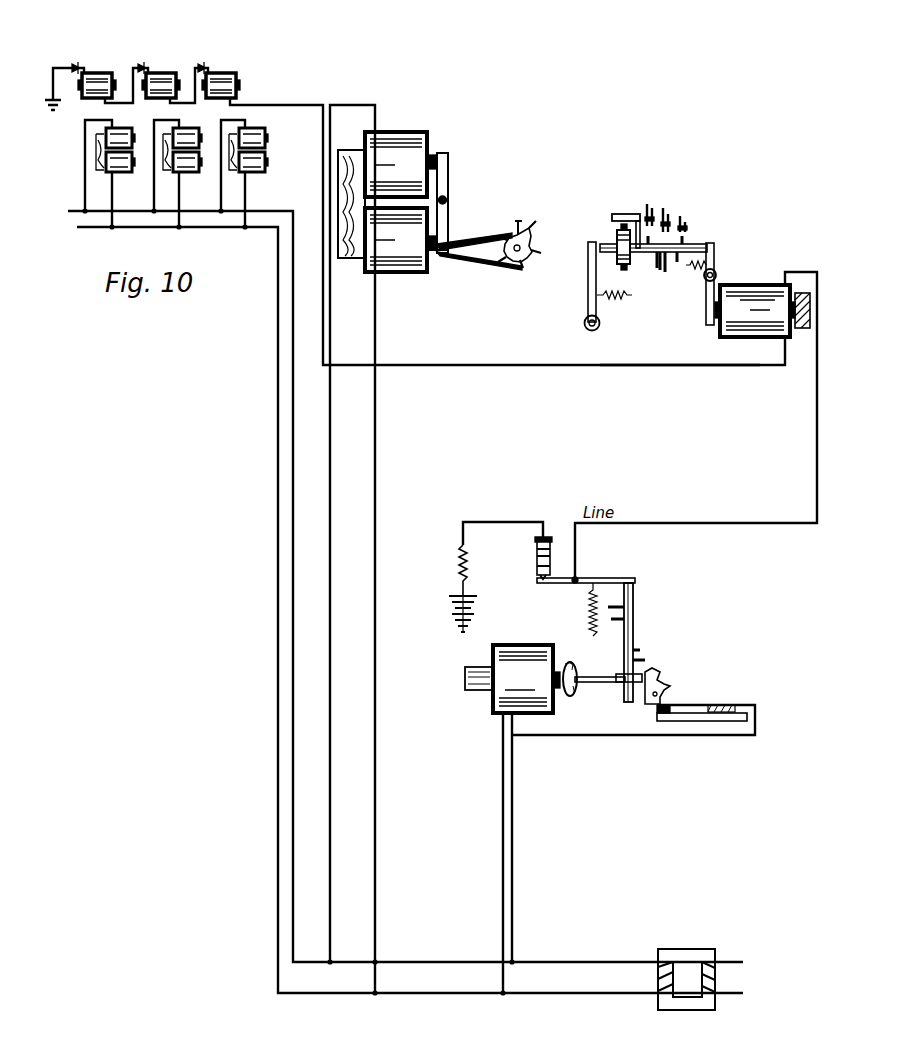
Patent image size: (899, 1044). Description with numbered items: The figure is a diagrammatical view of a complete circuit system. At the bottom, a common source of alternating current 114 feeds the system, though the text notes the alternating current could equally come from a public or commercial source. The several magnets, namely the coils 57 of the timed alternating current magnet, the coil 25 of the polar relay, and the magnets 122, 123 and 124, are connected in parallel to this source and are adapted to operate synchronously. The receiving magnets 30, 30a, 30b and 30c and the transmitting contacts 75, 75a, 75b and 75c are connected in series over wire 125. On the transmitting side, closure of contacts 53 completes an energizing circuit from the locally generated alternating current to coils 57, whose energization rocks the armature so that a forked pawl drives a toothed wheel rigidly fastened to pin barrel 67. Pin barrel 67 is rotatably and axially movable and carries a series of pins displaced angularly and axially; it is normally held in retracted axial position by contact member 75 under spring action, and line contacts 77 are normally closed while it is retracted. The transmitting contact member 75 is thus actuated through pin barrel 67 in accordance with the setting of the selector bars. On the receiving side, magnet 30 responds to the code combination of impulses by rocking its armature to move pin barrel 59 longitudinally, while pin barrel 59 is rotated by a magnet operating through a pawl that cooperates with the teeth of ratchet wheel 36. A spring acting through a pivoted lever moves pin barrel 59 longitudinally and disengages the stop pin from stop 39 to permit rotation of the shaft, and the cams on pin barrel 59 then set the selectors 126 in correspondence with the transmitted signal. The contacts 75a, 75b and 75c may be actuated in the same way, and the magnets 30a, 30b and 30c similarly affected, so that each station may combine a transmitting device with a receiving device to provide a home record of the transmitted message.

The transmitting contact 75c is at (74, 62).
The receiving magnet 30c is at (100, 73).
The transmitting contact 75b is at (140, 62).
The receiving magnet 30b is at (165, 73).
The transmitting contact 75a is at (200, 62).
The receiving magnet 30a is at (224, 73).
The magnet 124 is at (110, 130).
The magnet 123 is at (178, 130).
The magnet 122 is at (245, 130).
The coil 25 is at (402, 132).
The ratchet wheel 36 is at (600, 244).
The stop 39 is at (624, 214).
The selectors 126 is at (682, 214).
The pin barrel 59 is at (658, 258).
The magnet 30 is at (770, 285).
The wire 125 is at (670, 365).
The line contacts 77 is at (536, 566).
The contact member 75 is at (548, 584).
The coils 57 is at (527, 646).
The pin barrel 67 is at (633, 630).
The contacts 53 is at (662, 720).
The common source of alternating current 114 is at (700, 930).